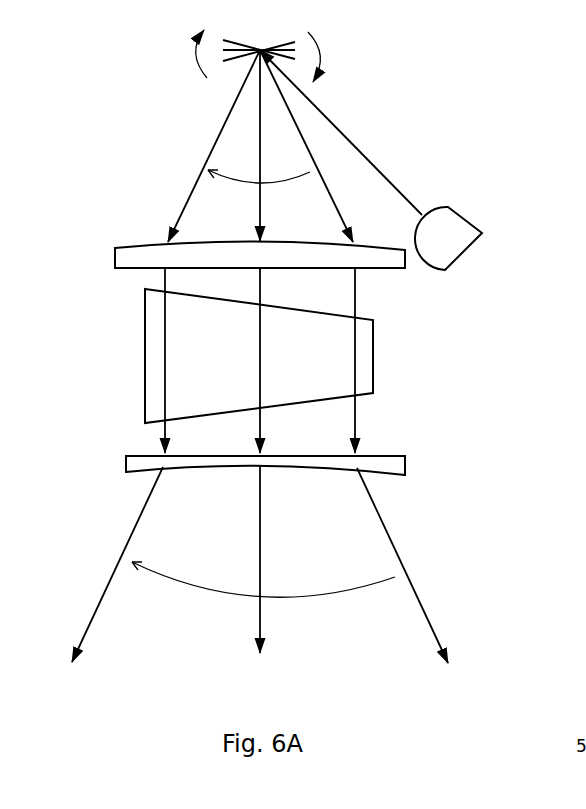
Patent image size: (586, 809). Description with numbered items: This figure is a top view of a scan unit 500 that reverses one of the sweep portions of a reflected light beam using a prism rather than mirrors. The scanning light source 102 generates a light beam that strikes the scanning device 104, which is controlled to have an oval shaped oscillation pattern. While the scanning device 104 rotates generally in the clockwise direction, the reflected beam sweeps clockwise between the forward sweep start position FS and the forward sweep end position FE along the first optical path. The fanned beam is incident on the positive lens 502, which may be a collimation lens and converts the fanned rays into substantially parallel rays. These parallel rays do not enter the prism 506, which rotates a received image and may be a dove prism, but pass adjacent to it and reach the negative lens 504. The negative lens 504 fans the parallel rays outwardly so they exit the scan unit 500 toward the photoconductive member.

The scan unit 500 is at (110, 55).
The scanning device 104 is at (285, 26).
The scanning light source 102 is at (468, 195).
The positive lens 502 is at (123, 257).
The negative lens 504 is at (135, 462).
The prism 506 is at (367, 390).
The forward sweep end position FE is at (188, 188).
The forward sweep start position FS is at (330, 188).